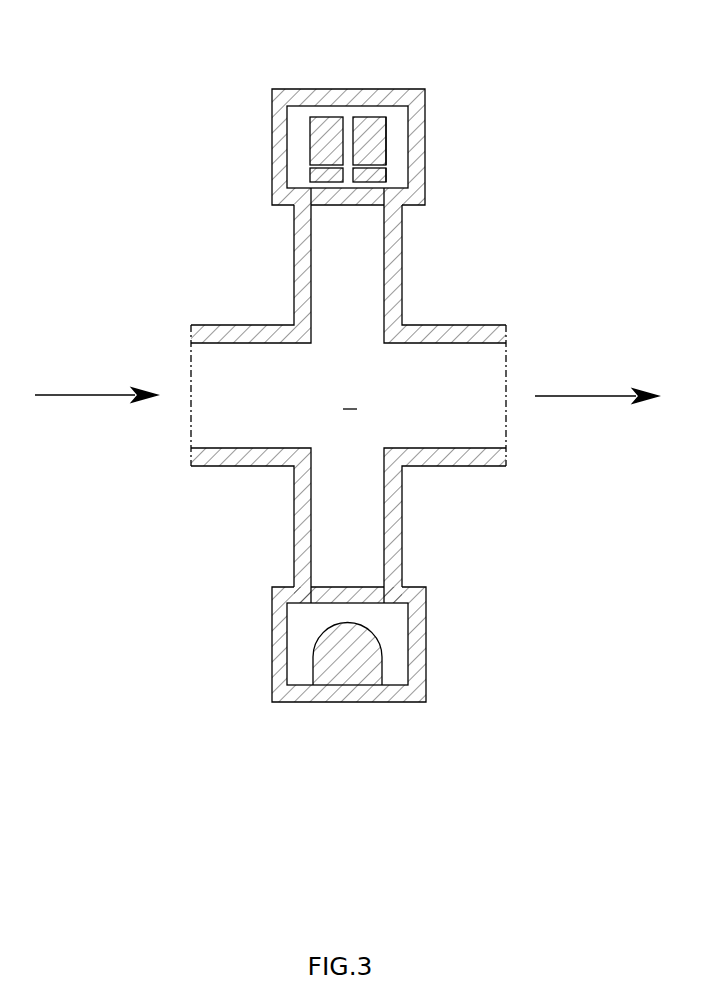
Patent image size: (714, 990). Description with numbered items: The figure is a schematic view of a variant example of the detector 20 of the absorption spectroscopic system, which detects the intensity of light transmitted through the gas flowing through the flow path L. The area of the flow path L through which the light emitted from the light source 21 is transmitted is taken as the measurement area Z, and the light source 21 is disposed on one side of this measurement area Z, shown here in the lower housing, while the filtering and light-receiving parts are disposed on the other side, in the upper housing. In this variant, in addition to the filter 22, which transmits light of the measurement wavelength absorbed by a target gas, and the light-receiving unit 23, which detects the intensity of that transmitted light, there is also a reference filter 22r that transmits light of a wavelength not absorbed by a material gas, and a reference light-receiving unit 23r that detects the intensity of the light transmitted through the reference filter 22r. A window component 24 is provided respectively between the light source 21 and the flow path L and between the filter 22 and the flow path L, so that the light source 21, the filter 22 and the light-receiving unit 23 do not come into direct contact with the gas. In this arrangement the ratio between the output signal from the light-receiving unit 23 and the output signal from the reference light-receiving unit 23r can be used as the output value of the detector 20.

The detector 20 is at (436, 78).
The light source 21 is at (383, 665).
The filter 22 is at (310, 168).
The reference filter 22r is at (386, 168).
The light-receiving unit 23 is at (310, 125).
The reference light-receiving unit 23r is at (387, 125).
The window component 24 is at (403, 210).
The flow path L is at (497, 378).
The measurement area Z is at (348, 395).